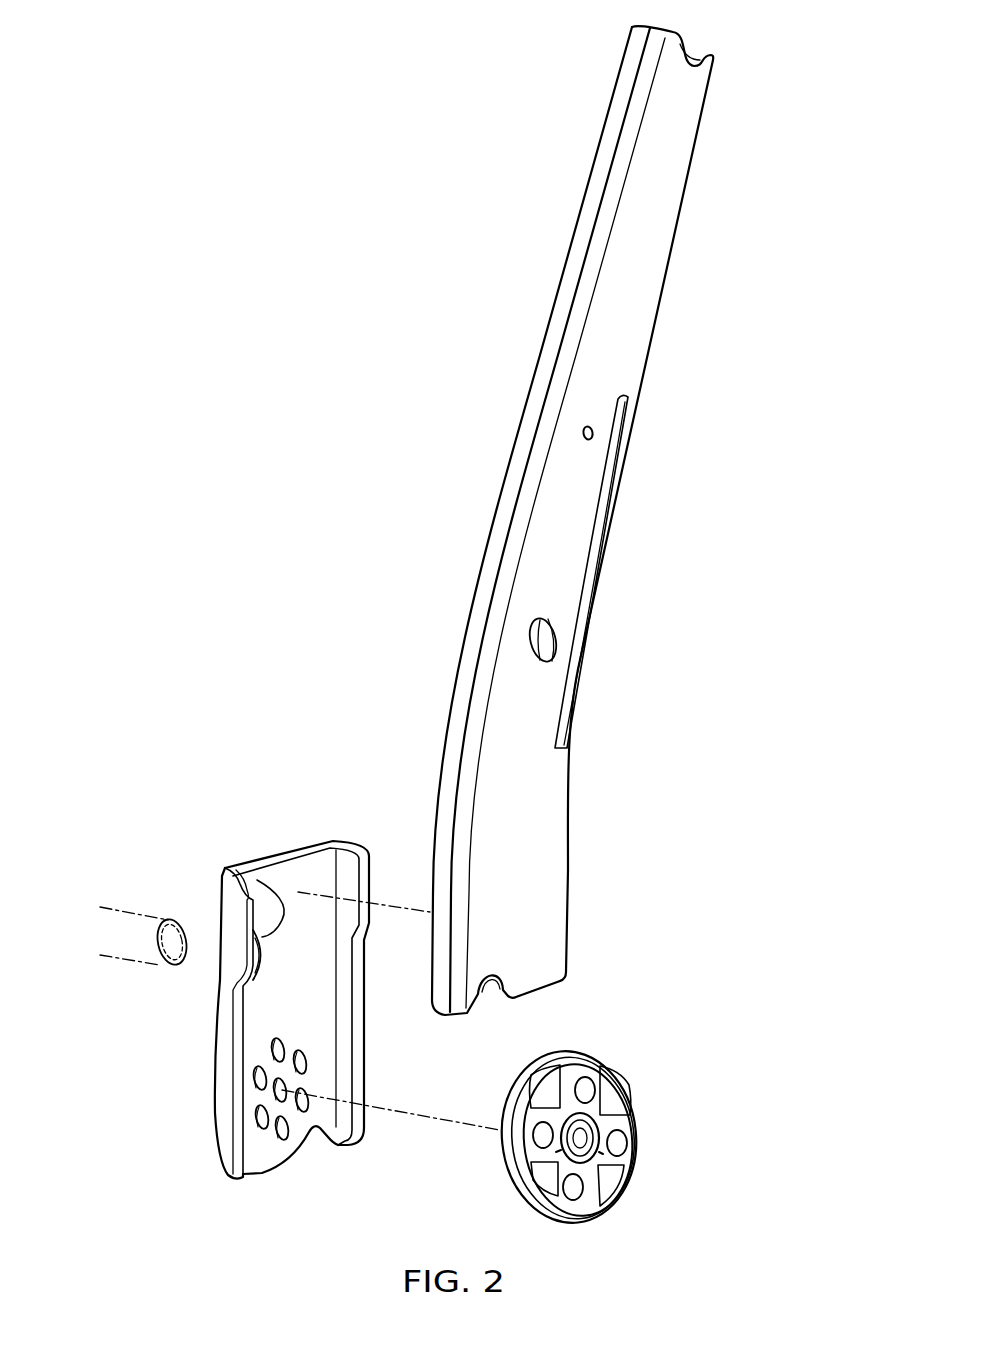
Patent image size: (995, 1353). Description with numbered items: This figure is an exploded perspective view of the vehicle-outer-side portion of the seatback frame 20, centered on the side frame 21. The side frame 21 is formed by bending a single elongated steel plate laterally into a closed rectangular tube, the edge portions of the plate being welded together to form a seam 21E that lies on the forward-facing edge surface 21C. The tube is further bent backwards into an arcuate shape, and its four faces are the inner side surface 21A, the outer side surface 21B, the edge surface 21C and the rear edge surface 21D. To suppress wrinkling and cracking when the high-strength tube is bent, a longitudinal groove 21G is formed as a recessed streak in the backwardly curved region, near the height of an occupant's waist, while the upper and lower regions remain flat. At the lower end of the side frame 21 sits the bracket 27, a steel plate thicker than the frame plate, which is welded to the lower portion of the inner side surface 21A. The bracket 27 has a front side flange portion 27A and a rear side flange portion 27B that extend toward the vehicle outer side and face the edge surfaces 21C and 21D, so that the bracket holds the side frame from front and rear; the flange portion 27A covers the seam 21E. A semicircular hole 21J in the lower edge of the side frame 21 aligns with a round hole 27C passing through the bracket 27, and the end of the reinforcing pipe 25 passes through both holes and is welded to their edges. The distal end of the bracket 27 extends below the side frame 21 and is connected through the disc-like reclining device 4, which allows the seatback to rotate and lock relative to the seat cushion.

The seatback frame 20 is at (488, 106).
The side frame 21 is at (608, 139).
The inner side surface 21A is at (593, 192).
The outer side surface 21B is at (652, 242).
The edge surface 21C is at (565, 295).
The rear edge surface 21D is at (650, 272).
The seam 21E is at (557, 358).
The groove 21G is at (605, 497).
The semicircular hole 21J is at (488, 986).
The reinforcing pipe 25 is at (127, 917).
The bracket 27 is at (297, 861).
The front side flange portion 27A is at (237, 917).
The rear side flange portion 27B is at (350, 863).
The round hole 27C is at (279, 913).
The reclining device 4 is at (622, 1080).